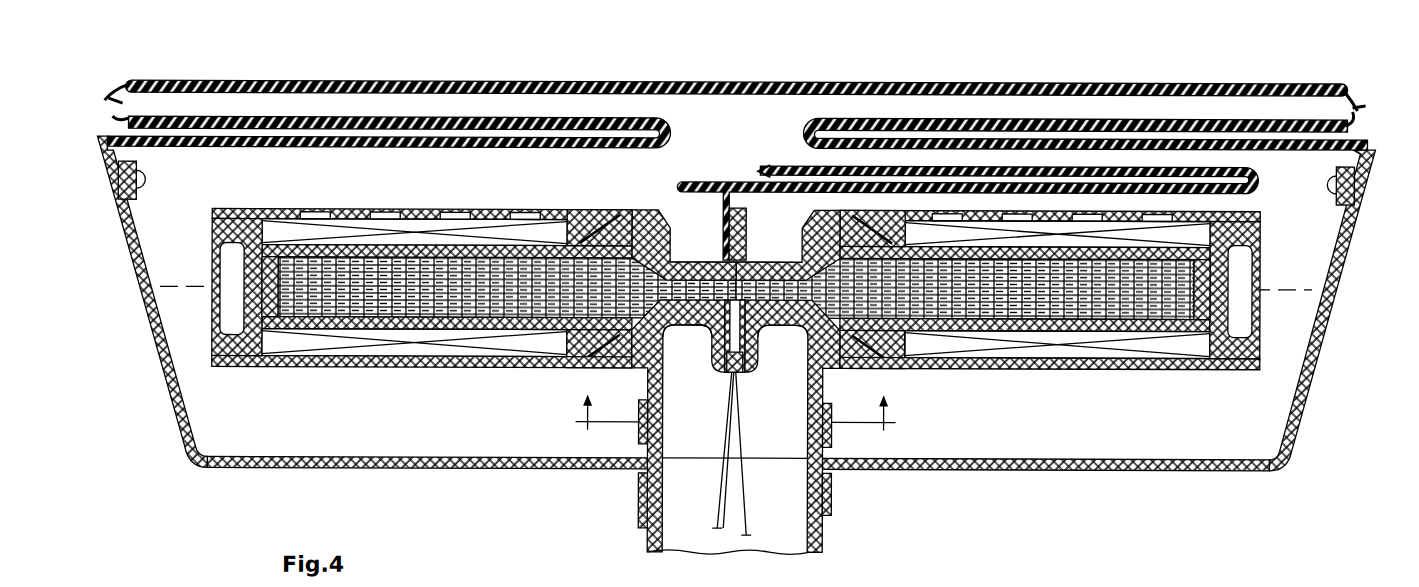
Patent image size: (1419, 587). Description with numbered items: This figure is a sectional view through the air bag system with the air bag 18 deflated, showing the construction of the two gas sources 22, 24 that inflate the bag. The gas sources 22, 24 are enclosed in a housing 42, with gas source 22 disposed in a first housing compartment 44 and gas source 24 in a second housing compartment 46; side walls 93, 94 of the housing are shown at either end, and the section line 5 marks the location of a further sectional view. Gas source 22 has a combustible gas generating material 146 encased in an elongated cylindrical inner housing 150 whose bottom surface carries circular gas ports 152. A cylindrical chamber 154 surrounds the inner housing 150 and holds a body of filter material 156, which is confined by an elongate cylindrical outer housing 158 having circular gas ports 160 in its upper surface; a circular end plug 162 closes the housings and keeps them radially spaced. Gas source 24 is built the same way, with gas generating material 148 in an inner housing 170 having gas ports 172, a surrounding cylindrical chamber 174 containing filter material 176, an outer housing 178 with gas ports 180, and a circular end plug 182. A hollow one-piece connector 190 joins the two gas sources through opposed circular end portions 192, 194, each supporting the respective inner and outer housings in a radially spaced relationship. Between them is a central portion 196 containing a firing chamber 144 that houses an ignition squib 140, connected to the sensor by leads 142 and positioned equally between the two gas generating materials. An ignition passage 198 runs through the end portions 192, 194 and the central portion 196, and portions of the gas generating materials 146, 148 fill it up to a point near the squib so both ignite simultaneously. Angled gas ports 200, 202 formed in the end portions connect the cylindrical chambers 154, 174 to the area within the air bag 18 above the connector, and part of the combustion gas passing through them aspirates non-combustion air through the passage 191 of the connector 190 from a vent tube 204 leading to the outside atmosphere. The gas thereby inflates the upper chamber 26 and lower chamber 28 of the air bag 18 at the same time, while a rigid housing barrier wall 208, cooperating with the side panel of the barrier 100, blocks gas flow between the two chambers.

The inflatable air bag 18 is at (325, 80).
The upper chamber 26 is at (733, 120).
The barrier 100 is at (713, 182).
The rigid housing barrier wall 208 is at (738, 217).
The angled gas port 200 is at (653, 216).
The ignition passage 198 is at (706, 293).
The angled gas port 202 is at (826, 232).
The cylindrical chamber 154 is at (275, 215).
The filter material 156 is at (290, 226).
The circular gas ports 160 is at (508, 212).
The outer housing 158 is at (553, 210).
The circular gas ports 152 is at (412, 327).
The inner housing 150 is at (548, 338).
The circular end plug 162 is at (248, 356).
The gas generating material 146 is at (530, 292).
The gas generating material 148 is at (955, 305).
The outer housing 178 is at (918, 222).
The circular gas ports 180 is at (1168, 213).
The inner housing 170 is at (915, 336).
The circular gas ports 172 is at (1000, 326).
The cylindrical chamber 174 is at (1090, 330).
The filter material 176 is at (1170, 344).
The circular end plug 182 is at (1265, 346).
The gas source 24 is at (1110, 396).
The gas source 22 is at (290, 405).
The first housing compartment 44 is at (357, 432).
The second housing compartment 46 is at (1070, 435).
The left side wall 93 is at (132, 302).
The right side wall 94 is at (1327, 305).
The lower chamber 28 is at (1300, 216).
The housing 42 is at (1332, 372).
The one-piece connector 190 is at (815, 505).
The passage 191 is at (762, 430).
The end portion 192 is at (640, 352).
The end portion 194 is at (878, 352).
The firing chamber 144 is at (715, 328).
The central portion 196 is at (786, 325).
The ignition squib 140 is at (734, 352).
The leads 142 is at (705, 494).
The vent tube 204 is at (777, 536).
The section line 5- 5 is at (734, 417).